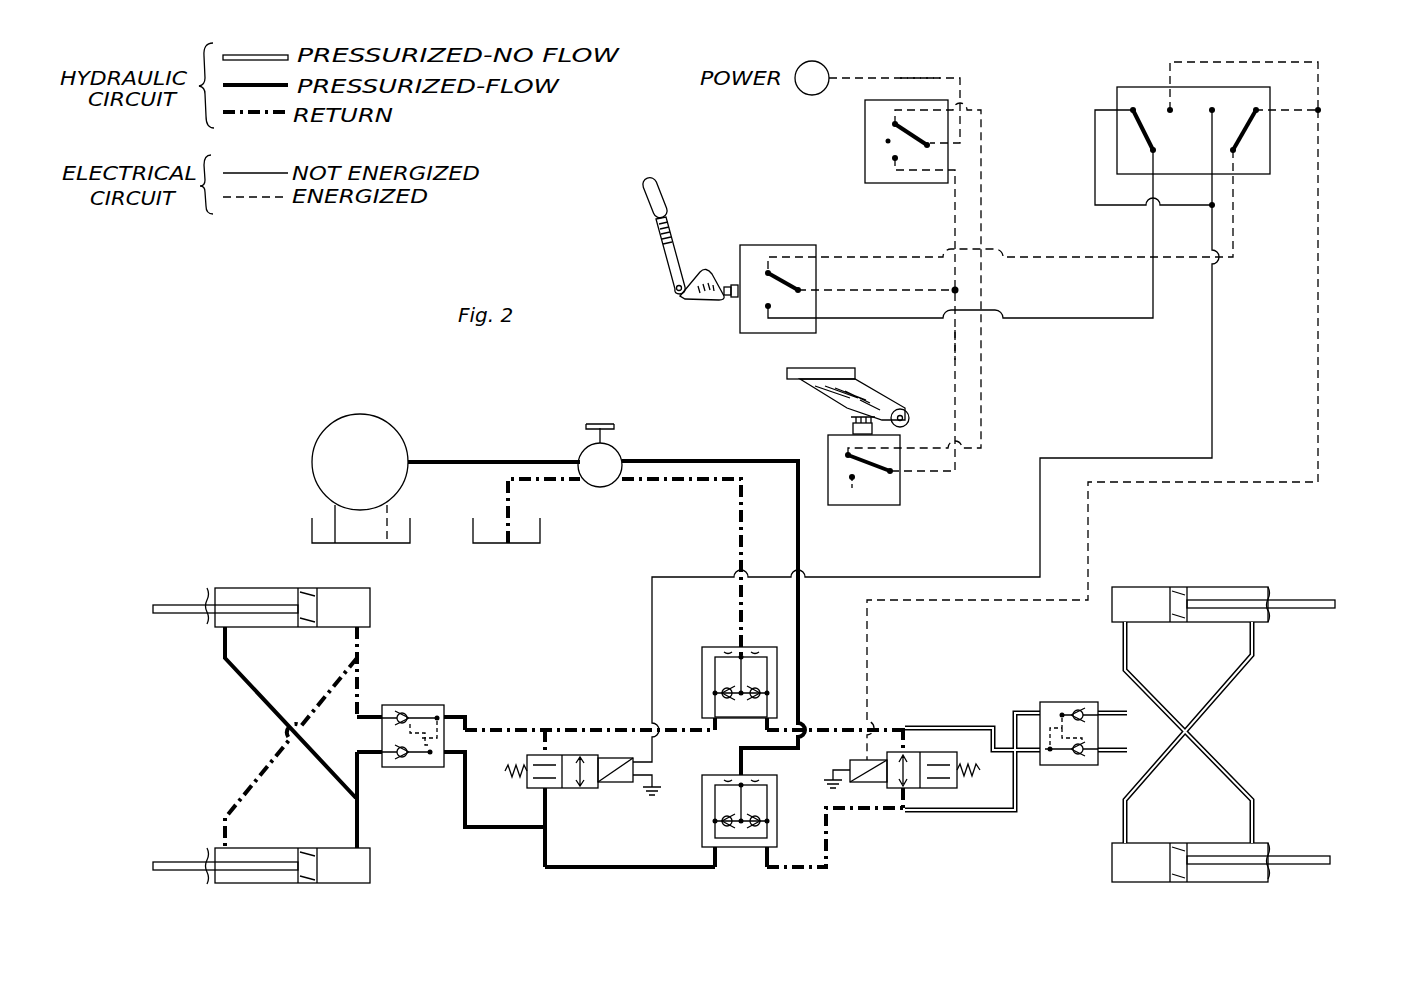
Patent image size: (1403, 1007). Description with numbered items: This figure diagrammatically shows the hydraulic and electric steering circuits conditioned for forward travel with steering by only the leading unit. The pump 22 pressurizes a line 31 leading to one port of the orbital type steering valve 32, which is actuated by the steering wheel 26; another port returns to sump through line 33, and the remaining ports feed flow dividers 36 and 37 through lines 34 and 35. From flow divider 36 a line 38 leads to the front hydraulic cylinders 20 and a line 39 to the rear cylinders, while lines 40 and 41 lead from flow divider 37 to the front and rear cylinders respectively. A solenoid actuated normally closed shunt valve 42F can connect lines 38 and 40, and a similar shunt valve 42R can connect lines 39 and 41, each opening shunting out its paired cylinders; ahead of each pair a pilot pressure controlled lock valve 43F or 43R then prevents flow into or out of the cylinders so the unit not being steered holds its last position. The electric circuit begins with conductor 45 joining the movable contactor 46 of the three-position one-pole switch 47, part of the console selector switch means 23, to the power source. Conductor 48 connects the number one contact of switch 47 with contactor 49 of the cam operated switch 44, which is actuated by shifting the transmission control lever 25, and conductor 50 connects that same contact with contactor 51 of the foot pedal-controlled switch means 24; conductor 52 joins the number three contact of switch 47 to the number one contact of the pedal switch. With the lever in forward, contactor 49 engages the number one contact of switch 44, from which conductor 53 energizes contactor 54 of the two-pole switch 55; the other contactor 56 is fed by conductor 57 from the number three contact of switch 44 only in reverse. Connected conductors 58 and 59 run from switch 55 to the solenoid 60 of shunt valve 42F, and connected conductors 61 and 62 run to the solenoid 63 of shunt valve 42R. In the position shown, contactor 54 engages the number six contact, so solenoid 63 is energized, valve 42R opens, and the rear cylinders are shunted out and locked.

The hydraulic cylinders 20 is at (322, 640).
The pump 22 is at (356, 422).
The selector switch means 23 is at (985, 38).
The foot pedal-controlled switch means 24 is at (805, 408).
The transmission control lever 25 is at (665, 196).
The steering wheel 26 is at (607, 421).
The line 31 is at (479, 458).
The steering valve 32 is at (608, 478).
The line 33 is at (505, 503).
The line 34 is at (705, 458).
The line 35 is at (712, 485).
The flow divider 36 is at (757, 835).
The flow divider 37 is at (712, 646).
The line 38 is at (633, 870).
The line 39 is at (830, 858).
The line 40 is at (576, 728).
The line 41 is at (822, 724).
The shunt valve 42F is at (568, 800).
The shunt valve 42R is at (924, 814).
The lock valve 43F is at (462, 697).
The lock valve 43R is at (1071, 691).
The cam operated switch 44 is at (746, 244).
The conductor 45 is at (898, 78).
The movable contactor 46 is at (886, 148).
The three-position one-pole switch 47 is at (843, 129).
The conductor 48 is at (953, 212).
The contactor 49 is at (790, 285).
The conductor 50 is at (955, 343).
The contactor 51 is at (895, 477).
The conductor 52 is at (985, 152).
The conductor 53 is at (1068, 257).
The contactor 54 is at (1243, 126).
The two-pole switch 55 is at (1215, 84).
The contactor 56 is at (1160, 128).
The conductor 57 is at (1092, 318).
The conductor 58 is at (1095, 184).
The conductor 59 is at (1213, 303).
The solenoid 60 is at (627, 775).
The conductor 61 is at (1300, 62).
The conductor 62 is at (1320, 178).
The solenoid 63 is at (876, 778).